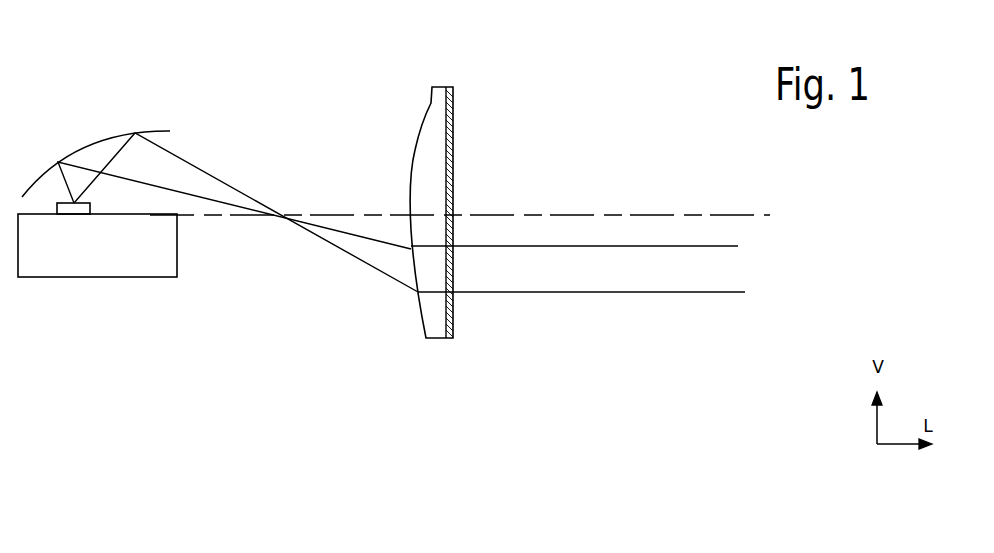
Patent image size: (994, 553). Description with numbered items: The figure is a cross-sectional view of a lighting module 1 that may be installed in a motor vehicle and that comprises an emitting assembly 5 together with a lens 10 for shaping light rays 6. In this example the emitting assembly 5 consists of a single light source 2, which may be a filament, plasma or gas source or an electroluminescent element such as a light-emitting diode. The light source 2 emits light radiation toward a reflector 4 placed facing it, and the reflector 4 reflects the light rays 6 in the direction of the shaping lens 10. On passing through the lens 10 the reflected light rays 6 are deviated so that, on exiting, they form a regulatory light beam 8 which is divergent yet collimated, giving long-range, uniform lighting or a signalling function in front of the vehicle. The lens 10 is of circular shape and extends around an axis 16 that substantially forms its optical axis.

The lighting module 1 is at (95, 362).
The light source 2 is at (75, 210).
The reflector 4 is at (103, 139).
The emitting assembly 5 is at (97, 245).
The light rays 6 is at (350, 254).
The light beam 8 is at (567, 248).
The lens 10 is at (433, 272).
The axis 16 is at (485, 213).